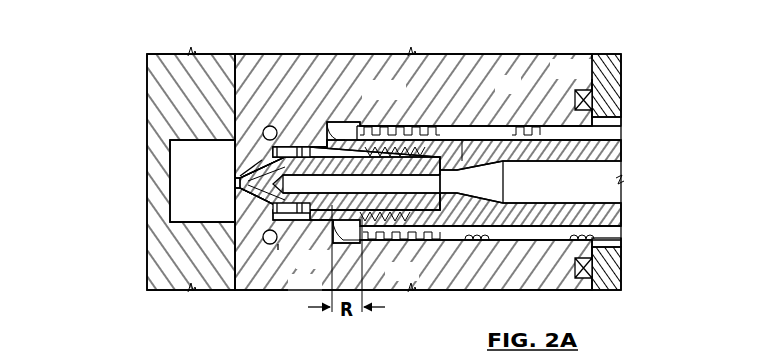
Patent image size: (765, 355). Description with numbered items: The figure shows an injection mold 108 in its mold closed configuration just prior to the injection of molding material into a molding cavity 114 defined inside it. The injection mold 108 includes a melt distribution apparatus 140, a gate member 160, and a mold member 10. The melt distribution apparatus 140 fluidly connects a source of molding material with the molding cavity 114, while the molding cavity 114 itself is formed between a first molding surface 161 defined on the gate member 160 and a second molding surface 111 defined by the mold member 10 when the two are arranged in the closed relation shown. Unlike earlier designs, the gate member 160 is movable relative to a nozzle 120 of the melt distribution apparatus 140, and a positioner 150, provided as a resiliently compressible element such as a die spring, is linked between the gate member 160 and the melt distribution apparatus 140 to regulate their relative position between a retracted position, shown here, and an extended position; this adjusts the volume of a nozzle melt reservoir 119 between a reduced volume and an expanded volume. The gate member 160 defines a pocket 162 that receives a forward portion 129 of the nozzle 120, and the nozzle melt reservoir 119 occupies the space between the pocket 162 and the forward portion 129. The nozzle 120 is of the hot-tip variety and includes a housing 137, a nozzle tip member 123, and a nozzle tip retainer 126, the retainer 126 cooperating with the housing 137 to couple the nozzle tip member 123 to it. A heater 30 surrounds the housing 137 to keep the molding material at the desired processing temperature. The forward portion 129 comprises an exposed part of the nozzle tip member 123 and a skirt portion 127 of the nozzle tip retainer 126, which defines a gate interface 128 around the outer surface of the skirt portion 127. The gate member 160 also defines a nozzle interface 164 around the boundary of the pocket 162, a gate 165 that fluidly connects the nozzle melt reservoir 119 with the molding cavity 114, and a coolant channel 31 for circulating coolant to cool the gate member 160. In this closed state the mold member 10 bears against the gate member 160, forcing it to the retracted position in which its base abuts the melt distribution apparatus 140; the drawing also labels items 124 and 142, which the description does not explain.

The injection mold 108 is at (117, 127).
The mold member 10 is at (219, 107).
The second molding surface 111 is at (167, 142).
The gate 165 is at (236, 172).
The molding cavity 114 is at (212, 193).
The forward portion 129 is at (259, 155).
The nozzle tip member 123 is at (298, 156).
The nozzle melt reservoir 119 is at (257, 155).
The gate interface 128 is at (570, 195).
The nozzle interface 164 is at (350, 125).
The housing 137 is at (462, 155).
The gate member 160 is at (400, 101).
The heater 30 is at (510, 127).
The melt distribution apparatus 140 is at (606, 70).
The positioner 150 is at (590, 99).
The nozzle insert 124 is at (369, 195).
The nozzle 120 is at (625, 240).
The seal 142 is at (573, 258).
The nozzle tip retainer 126 is at (356, 235).
The skirt portion 127 is at (322, 216).
The pocket 162 is at (273, 243).
The coolant channel 31 is at (278, 246).
The first molding surface 161 is at (238, 250).